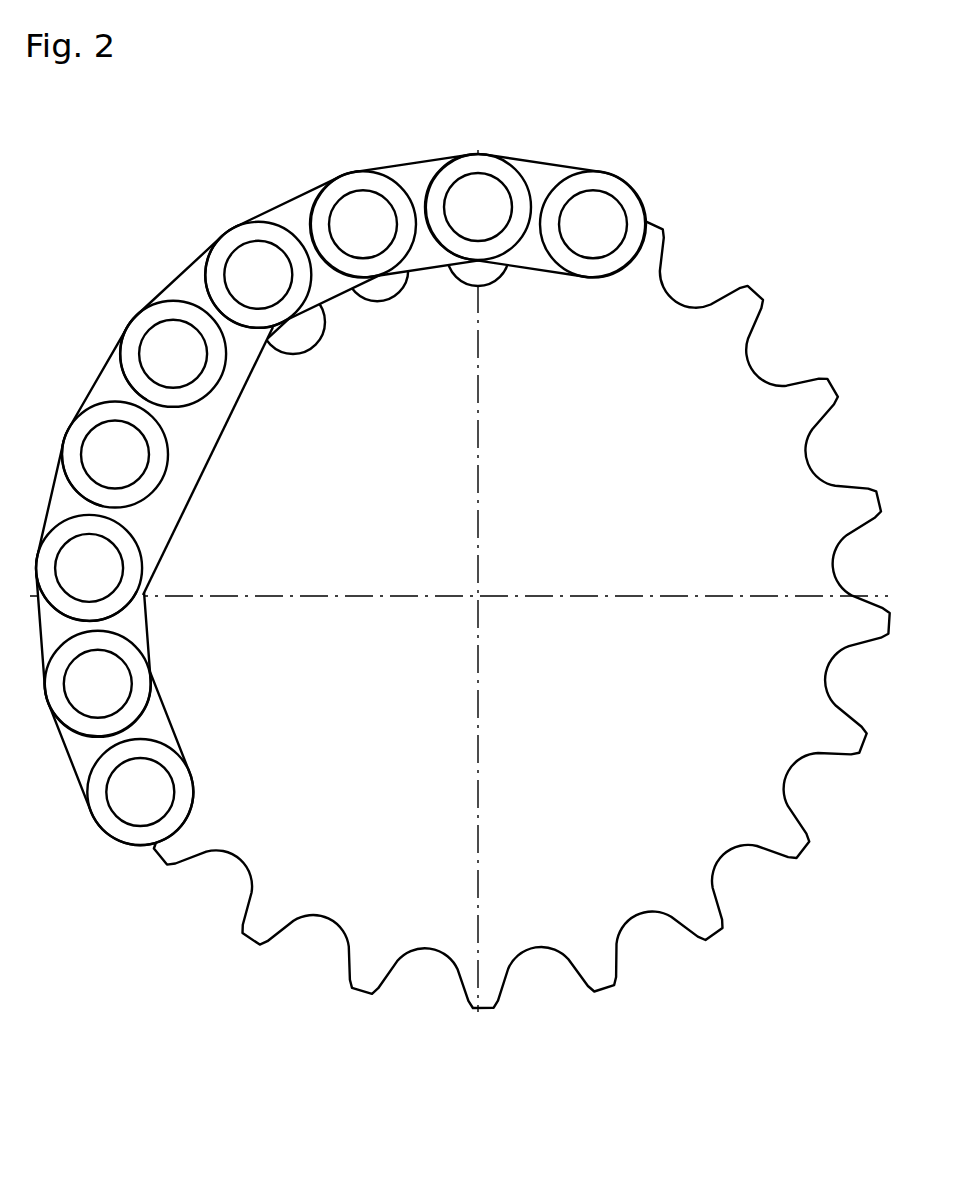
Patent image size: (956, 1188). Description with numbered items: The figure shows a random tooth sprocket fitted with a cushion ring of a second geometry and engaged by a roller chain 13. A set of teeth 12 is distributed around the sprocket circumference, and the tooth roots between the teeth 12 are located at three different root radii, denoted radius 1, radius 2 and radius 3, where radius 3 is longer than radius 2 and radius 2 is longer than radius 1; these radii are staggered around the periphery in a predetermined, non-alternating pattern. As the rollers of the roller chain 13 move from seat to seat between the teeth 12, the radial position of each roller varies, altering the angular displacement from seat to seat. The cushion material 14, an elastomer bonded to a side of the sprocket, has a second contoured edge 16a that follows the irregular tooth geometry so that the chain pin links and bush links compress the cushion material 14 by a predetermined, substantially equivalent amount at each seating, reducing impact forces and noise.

The teeth 12 is at (820, 392).
The roller chain 13 is at (125, 452).
The cushion material 14 is at (453, 524).
The second contoured edge 16a is at (493, 283).
The radius 1 is at (350, 885).
The radius 2 is at (485, 620).
The radius 3 is at (484, 657).